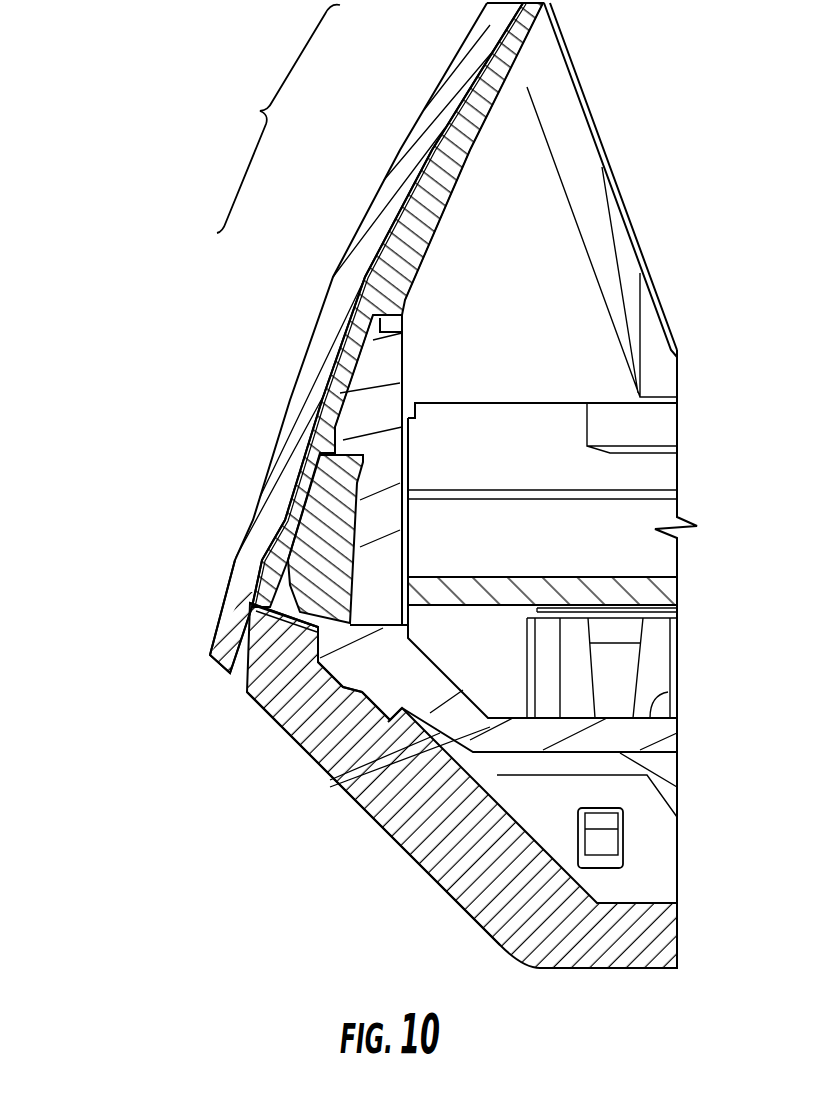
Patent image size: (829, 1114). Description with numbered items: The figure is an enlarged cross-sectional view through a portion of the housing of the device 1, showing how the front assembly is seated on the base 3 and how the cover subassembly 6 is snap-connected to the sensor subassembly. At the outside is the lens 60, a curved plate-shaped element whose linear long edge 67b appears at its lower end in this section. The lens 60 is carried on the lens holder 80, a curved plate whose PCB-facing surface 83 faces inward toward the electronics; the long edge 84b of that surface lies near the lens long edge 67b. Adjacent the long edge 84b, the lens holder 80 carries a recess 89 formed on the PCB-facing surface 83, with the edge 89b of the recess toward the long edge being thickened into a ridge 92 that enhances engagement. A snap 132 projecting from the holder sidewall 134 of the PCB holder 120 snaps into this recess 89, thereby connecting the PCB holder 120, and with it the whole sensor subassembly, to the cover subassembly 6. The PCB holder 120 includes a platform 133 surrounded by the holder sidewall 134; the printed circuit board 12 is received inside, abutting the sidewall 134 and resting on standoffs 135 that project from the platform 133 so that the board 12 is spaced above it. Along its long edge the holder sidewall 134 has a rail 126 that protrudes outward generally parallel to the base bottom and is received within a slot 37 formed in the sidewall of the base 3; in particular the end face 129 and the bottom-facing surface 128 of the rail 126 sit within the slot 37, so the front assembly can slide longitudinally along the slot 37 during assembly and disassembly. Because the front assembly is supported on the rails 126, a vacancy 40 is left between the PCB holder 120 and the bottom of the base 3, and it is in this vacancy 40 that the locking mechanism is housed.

The aircraft nose assembly 1 is at (132, 76).
The base 3 is at (433, 850).
The cover subassembly 6 is at (278, 119).
The printed circuit board 12 is at (640, 582).
The slot 37 is at (290, 713).
The vacancy 40 is at (660, 853).
The lens 60 is at (335, 278).
The long edge 67b is at (222, 667).
The lens holder 80 is at (436, 182).
The PCB-facing surface 83 is at (505, 140).
The long edge 84b is at (248, 617).
The recess 89 is at (382, 320).
The inner edge 89b is at (330, 447).
The ridge 92 is at (333, 477).
The PCB holder 120 is at (668, 740).
The rail 126 is at (338, 720).
The bottom-facing surface 128 is at (330, 781).
The end face 129 is at (318, 650).
The snap 132 is at (357, 393).
The platform 133 is at (650, 718).
The holder sidewall 134 is at (334, 793).
The standoff 135 is at (655, 655).